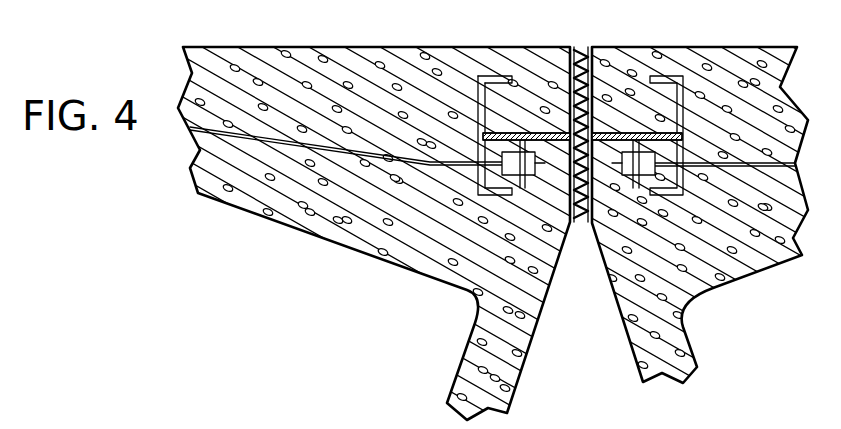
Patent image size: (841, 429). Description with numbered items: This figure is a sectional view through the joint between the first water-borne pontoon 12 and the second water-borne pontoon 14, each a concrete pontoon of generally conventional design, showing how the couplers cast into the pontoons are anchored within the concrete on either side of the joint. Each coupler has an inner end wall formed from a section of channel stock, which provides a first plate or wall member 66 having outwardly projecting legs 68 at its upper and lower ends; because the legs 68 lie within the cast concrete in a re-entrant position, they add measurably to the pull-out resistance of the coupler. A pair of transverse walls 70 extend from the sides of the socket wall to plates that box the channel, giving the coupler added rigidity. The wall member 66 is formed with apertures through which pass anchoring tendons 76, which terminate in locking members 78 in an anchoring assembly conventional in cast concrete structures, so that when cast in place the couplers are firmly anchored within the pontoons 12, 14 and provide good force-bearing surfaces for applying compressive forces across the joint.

The first water-borne pontoon 12 is at (363, 208).
The second water-borne pontoon 14 is at (737, 257).
The first plate or wall member 66 is at (473, 103).
The outwardly projecting legs 68 is at (495, 74).
The transverse walls 70 is at (527, 133).
The anchoring tendons 76 is at (434, 165).
The locking members 78 is at (520, 188).